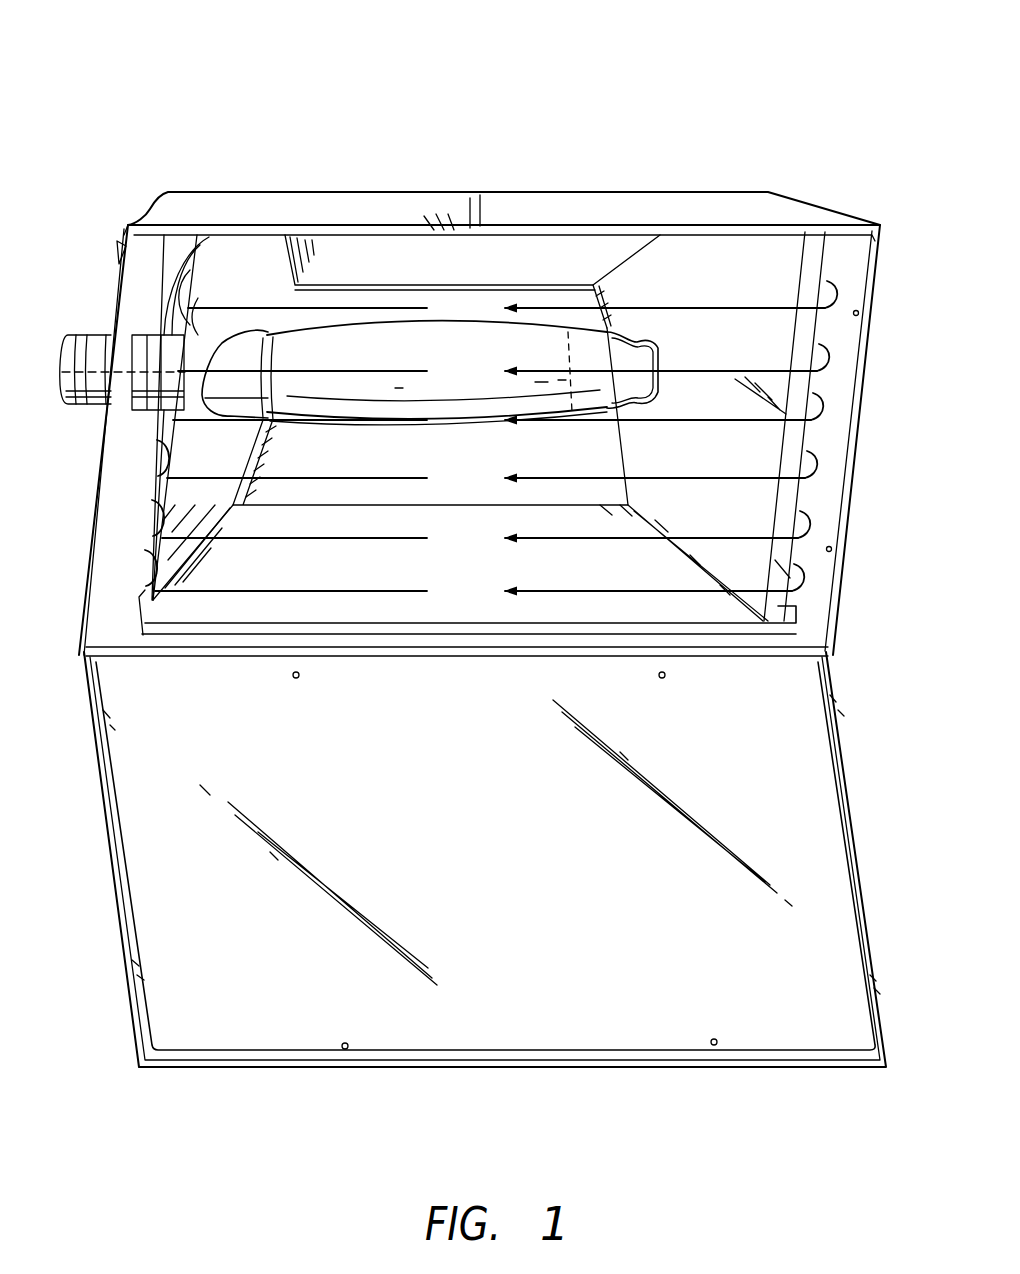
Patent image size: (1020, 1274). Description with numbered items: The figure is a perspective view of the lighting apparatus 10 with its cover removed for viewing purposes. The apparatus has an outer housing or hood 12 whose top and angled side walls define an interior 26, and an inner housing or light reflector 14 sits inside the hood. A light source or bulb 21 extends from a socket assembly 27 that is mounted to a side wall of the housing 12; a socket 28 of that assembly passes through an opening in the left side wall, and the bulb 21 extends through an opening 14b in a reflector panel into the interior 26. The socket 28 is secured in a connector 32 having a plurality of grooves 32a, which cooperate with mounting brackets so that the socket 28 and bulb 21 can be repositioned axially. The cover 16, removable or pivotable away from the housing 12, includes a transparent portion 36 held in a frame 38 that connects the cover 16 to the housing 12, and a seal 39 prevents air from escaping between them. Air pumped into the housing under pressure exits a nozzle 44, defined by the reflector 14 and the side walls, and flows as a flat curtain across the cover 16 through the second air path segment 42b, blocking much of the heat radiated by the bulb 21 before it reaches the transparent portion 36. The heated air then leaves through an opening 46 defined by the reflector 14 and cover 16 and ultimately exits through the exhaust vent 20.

The lighting apparatus 10 is at (243, 93).
The outer housing 12 is at (307, 210).
The inner housing 14 is at (739, 274).
The opening 14b is at (233, 410).
The cover 16 is at (640, 1015).
The exhaust vent 20 is at (206, 340).
The light source 21 is at (466, 358).
The interior 26 is at (714, 469).
The socket assembly 27 is at (60, 303).
The socket 28 is at (254, 364).
The connector 32 is at (78, 404).
The grooves 32a is at (76, 337).
The transparent portion 36 is at (522, 870).
The frame 38 is at (250, 1068).
The seal 39 is at (413, 1058).
The second air path segment 42b is at (556, 288).
The nozzle 44 is at (792, 606).
The opening 46 is at (136, 528).